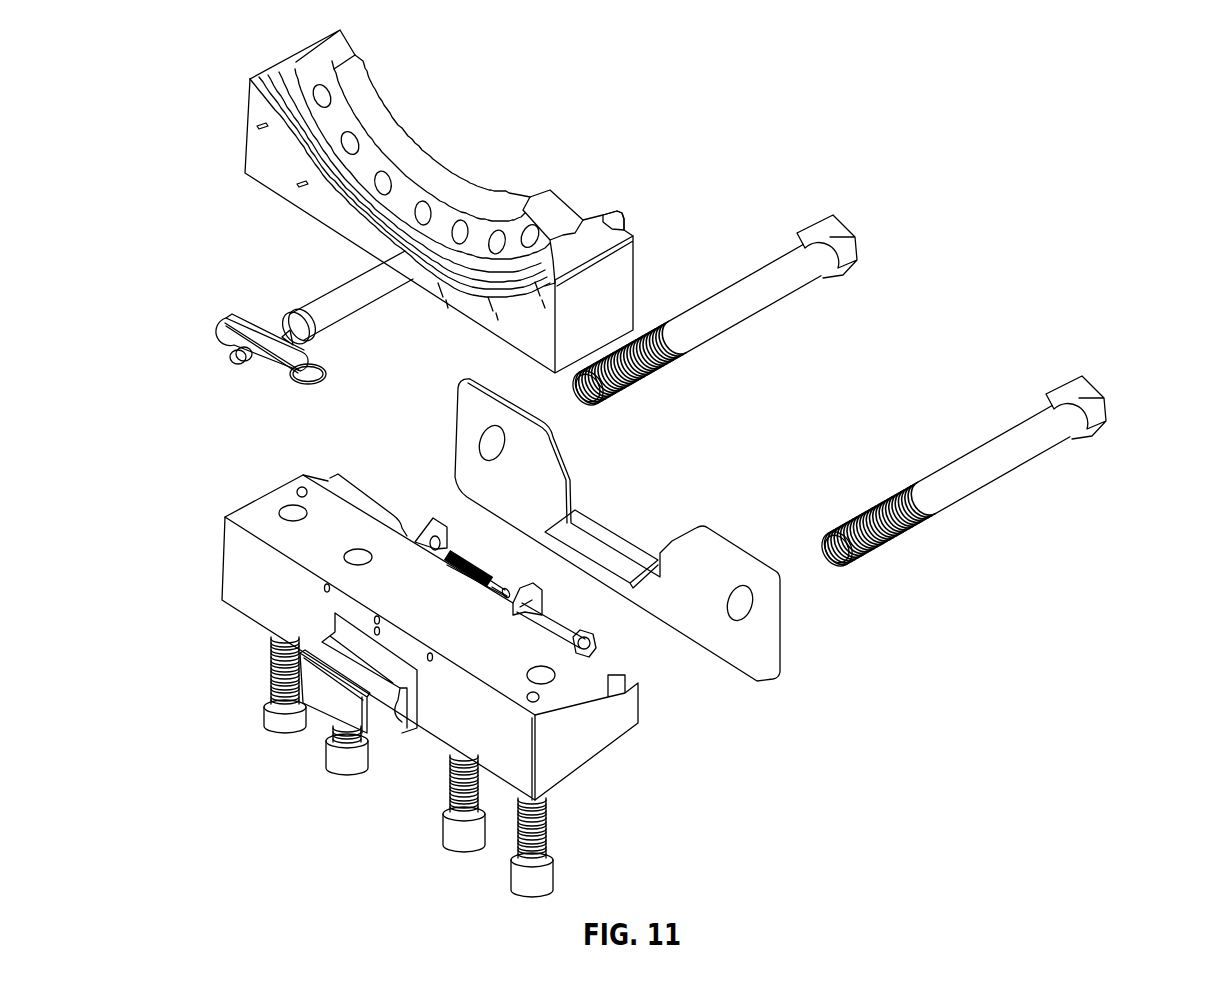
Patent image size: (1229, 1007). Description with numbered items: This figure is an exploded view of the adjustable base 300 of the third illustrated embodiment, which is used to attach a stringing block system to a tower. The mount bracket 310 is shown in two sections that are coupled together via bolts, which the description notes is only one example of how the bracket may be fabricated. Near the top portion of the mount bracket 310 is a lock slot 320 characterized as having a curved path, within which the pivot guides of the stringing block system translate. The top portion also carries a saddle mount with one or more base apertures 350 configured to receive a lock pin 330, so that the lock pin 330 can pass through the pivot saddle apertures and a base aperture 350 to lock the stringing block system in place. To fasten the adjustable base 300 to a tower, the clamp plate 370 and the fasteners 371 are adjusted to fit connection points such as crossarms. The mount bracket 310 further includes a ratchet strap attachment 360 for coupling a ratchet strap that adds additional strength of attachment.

The adjustable base 300 is at (1100, 66).
The mount bracket 310 is at (262, 192).
The lock slot 320 is at (625, 222).
The lock pin 330 is at (232, 338).
The base apertures 350 is at (351, 143).
The ratchet strap attachment 360 is at (317, 706).
The clamp plate 370 is at (604, 547).
The fasteners 371 is at (735, 324).